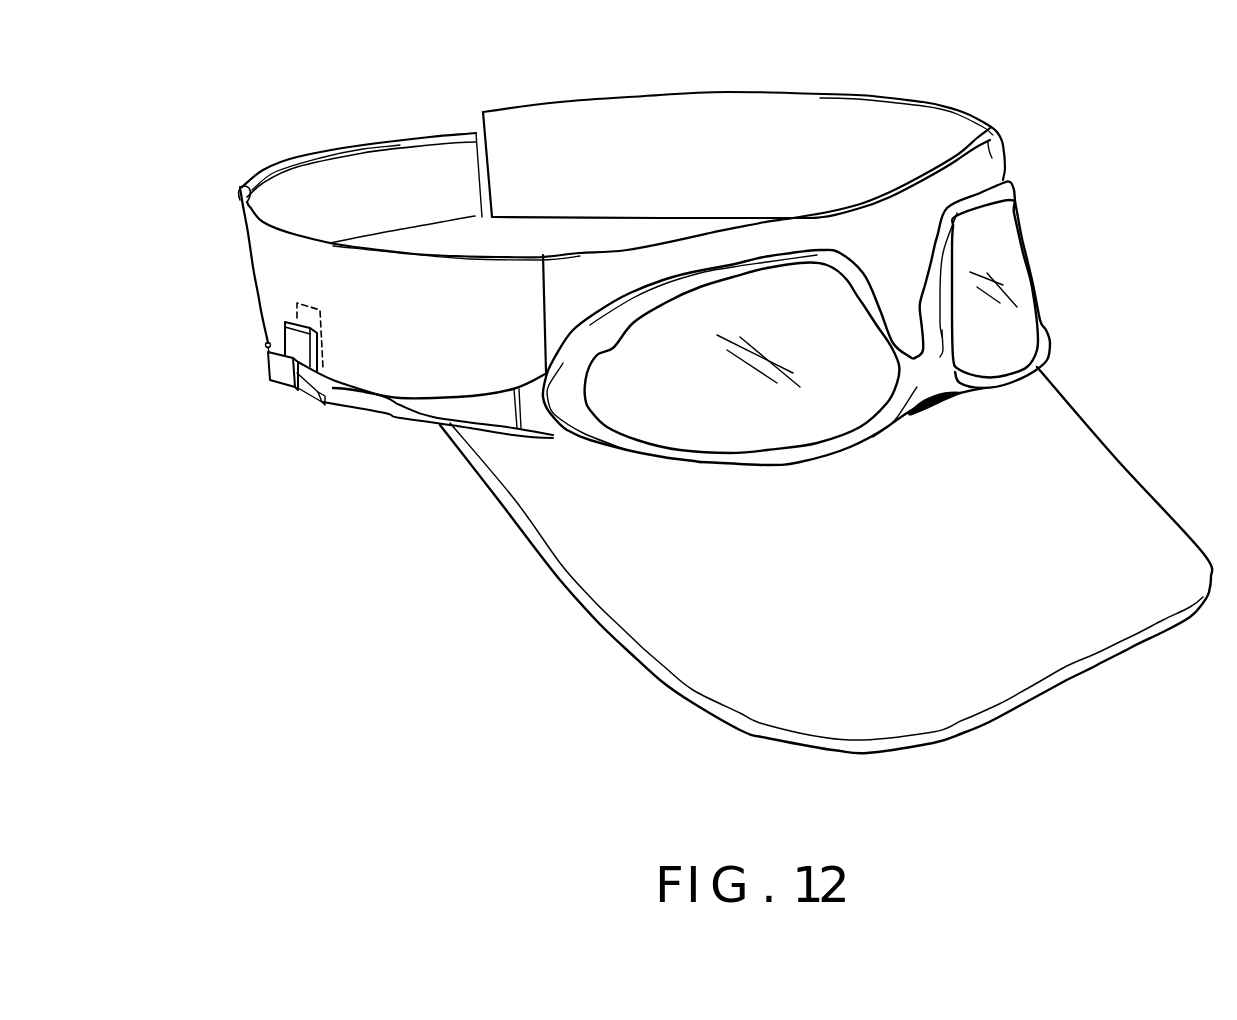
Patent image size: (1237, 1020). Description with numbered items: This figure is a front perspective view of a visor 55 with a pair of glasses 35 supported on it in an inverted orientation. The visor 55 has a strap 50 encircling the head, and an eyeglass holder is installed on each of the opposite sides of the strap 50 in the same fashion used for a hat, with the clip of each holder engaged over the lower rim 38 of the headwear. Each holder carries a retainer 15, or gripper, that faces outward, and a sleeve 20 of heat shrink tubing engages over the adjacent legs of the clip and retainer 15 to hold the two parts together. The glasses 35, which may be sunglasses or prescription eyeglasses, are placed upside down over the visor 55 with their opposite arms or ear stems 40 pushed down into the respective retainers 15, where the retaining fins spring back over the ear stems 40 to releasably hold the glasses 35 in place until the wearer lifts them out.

The visor 55 is at (982, 97).
The strap 50 is at (407, 280).
The ear stems 40 is at (453, 397).
The lower rim 38 is at (423, 425).
The glasses 35 is at (793, 466).
The sleeve 20 is at (290, 338).
The retainer 15 is at (272, 367).